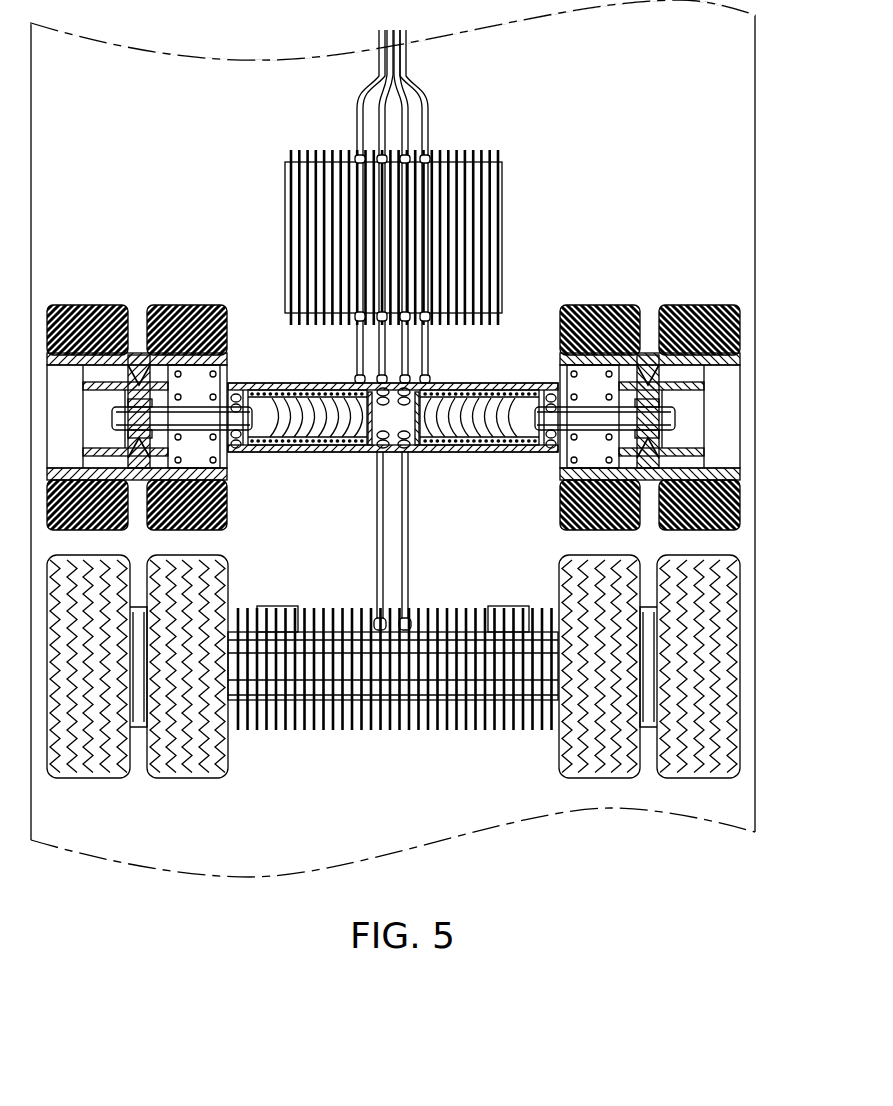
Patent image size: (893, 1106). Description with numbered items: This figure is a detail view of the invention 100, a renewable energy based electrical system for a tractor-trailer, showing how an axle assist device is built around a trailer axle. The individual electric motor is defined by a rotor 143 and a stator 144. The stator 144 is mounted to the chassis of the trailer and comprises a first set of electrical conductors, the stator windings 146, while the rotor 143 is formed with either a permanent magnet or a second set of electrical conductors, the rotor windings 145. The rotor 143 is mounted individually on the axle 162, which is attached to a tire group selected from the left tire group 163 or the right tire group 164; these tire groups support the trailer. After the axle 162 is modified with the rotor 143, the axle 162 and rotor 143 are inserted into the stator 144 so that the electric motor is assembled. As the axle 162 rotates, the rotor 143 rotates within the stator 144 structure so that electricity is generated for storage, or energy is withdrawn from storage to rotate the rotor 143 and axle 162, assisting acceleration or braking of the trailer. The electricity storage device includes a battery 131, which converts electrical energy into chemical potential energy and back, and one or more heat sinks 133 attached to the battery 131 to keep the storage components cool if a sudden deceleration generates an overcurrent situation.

The invention 100 is at (578, 196).
The battery 131 is at (503, 238).
The heat sinks 133 is at (484, 160).
The rotor 143 is at (352, 415).
The stator 144 is at (290, 385).
The rotor windings 145 is at (322, 420).
The stator windings 146 is at (360, 447).
The axle 162 is at (265, 385).
The left tire group 163 is at (88, 305).
The right tire group 164 is at (700, 320).